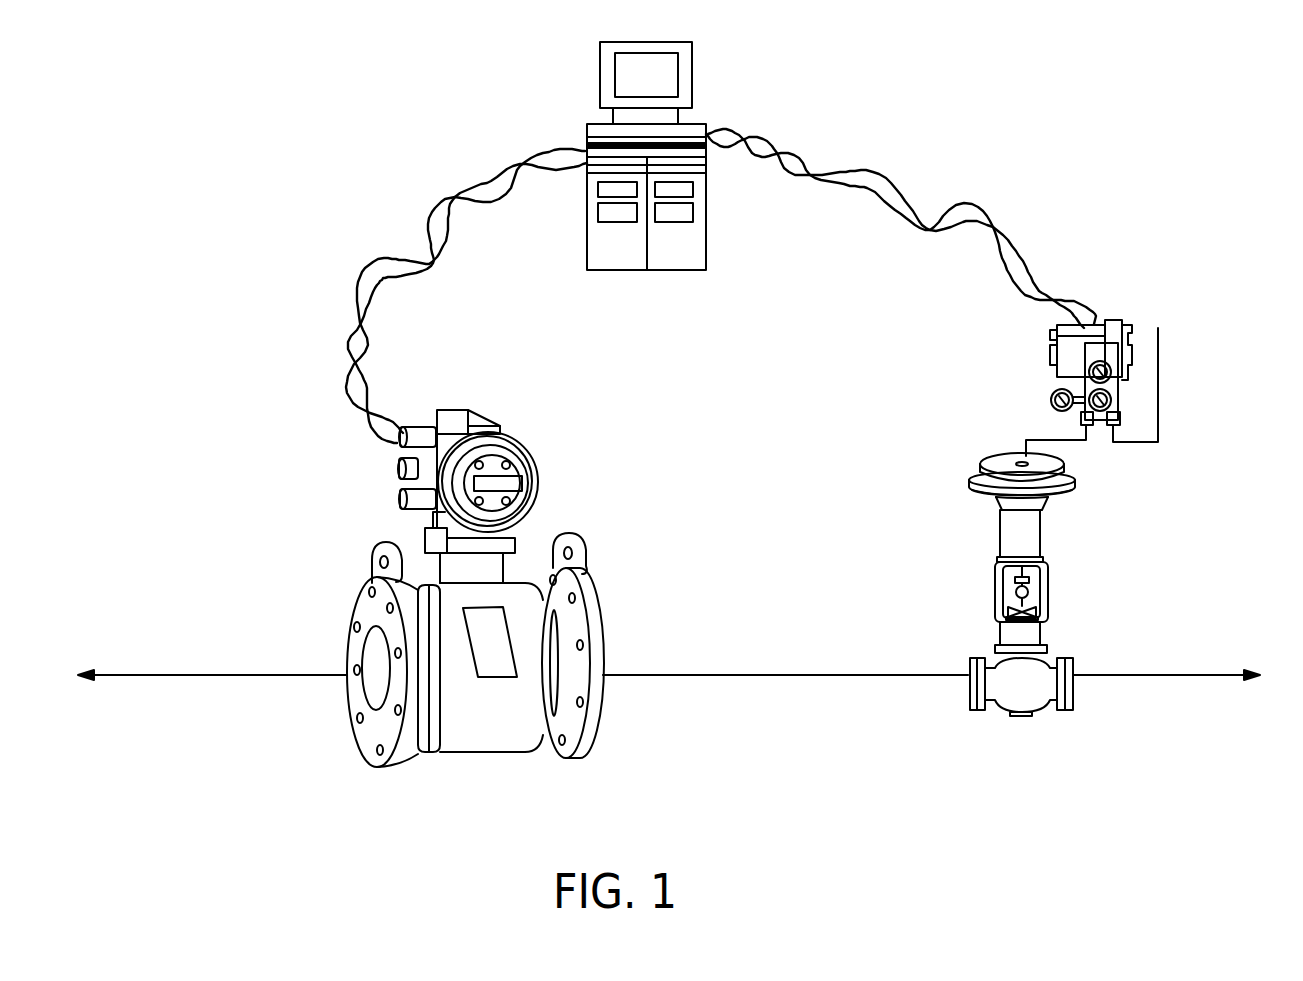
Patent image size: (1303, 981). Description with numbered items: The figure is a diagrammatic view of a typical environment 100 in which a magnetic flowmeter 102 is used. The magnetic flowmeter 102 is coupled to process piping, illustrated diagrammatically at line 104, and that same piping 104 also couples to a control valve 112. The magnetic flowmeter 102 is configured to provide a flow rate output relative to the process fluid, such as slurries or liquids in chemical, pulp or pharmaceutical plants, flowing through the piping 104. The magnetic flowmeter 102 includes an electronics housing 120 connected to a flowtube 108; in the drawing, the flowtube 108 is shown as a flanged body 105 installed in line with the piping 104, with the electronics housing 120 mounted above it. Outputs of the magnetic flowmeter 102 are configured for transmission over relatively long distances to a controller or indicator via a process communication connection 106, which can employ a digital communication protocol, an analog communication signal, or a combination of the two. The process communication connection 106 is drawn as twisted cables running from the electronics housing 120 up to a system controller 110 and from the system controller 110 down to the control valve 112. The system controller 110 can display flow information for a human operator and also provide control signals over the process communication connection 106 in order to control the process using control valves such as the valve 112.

The environment 100 is at (1045, 128).
The magnetic flowmeter 102 is at (668, 512).
The process piping 104 is at (725, 677).
The flow meter body 105 is at (482, 733).
The process communication connection 106 is at (442, 200).
The flowtube 108 is at (350, 720).
The system controller 110 is at (693, 63).
The control valve 112 is at (1047, 527).
The electronics housing 120 is at (512, 433).